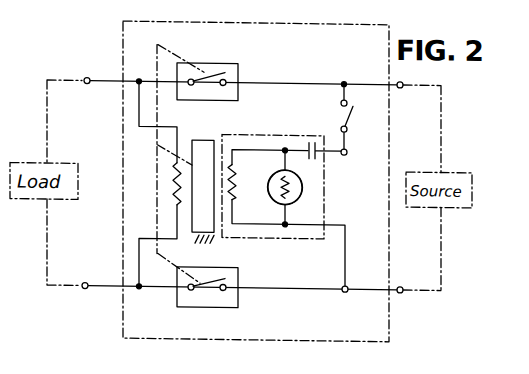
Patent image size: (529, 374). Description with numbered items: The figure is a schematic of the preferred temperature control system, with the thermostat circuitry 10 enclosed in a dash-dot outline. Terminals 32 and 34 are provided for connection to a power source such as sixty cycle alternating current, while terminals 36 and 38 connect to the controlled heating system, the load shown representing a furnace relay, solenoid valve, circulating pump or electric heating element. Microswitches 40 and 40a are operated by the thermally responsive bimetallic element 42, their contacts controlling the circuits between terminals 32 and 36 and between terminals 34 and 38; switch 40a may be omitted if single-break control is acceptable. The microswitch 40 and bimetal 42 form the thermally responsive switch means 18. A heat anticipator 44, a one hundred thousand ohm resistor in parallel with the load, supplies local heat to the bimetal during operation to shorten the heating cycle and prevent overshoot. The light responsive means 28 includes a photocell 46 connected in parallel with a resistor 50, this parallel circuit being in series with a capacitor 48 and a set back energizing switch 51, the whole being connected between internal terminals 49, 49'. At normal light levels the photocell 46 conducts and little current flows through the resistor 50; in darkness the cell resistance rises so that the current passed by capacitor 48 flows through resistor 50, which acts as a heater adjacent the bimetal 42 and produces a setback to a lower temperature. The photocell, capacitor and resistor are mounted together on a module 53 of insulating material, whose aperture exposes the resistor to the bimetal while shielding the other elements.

The control unit 10 is at (116, 40).
The thermally responsive switch means 18 is at (207, 135).
The light responsive means 28 is at (314, 191).
The terminal 32 is at (403, 87).
The terminal 34 is at (402, 284).
The terminal 36 is at (86, 87).
The terminal 38 is at (84, 284).
The microswitch 40 is at (223, 64).
The microswitch 40a is at (223, 309).
The bimetallic element 42 is at (211, 235).
The heat anticipator 44 is at (172, 189).
The photocell 46 is at (270, 200).
The capacitor 48 is at (314, 158).
The internal terminal 49 is at (360, 146).
The internal terminal 49' is at (339, 309).
The resistor 50 is at (236, 172).
The set back energizing switch 51 is at (352, 111).
The module 53 is at (306, 130).